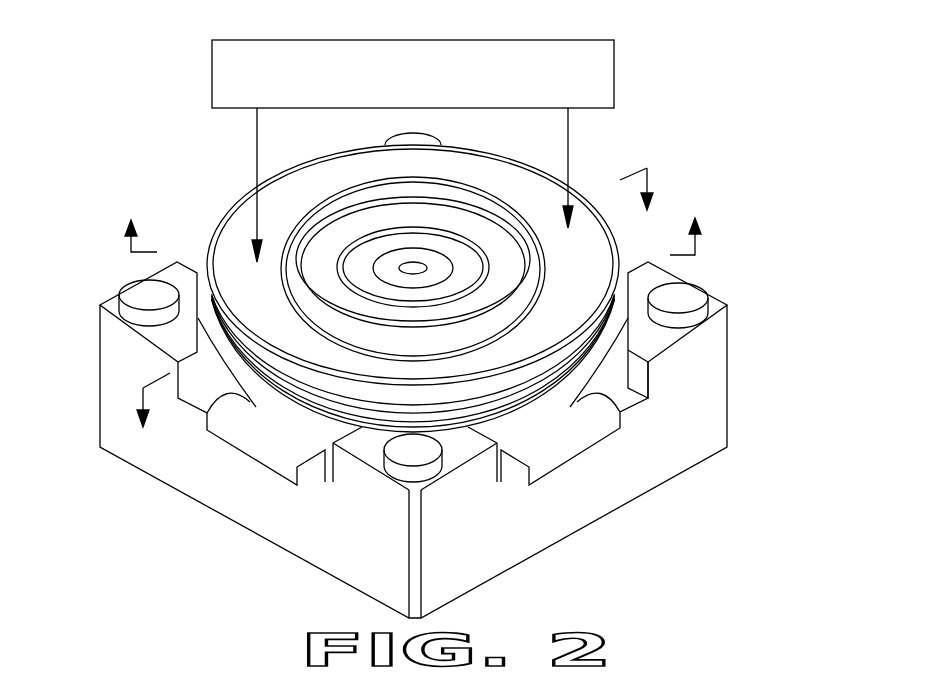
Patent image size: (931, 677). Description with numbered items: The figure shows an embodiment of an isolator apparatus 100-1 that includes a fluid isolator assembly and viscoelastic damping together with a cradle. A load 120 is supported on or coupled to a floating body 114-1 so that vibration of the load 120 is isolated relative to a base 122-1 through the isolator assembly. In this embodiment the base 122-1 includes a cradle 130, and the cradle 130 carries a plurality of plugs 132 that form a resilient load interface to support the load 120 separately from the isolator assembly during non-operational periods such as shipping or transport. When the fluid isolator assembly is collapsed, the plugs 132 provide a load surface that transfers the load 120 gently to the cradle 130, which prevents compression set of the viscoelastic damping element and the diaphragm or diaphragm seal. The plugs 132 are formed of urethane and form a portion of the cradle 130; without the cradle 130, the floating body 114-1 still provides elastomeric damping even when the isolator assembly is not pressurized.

The isolator apparatus 100-1 is at (695, 80).
The floating body 114-1 is at (240, 207).
The load 120 is at (212, 64).
The base 122-1 is at (736, 358).
The cradle 130 is at (582, 510).
The plugs 132 is at (140, 297).